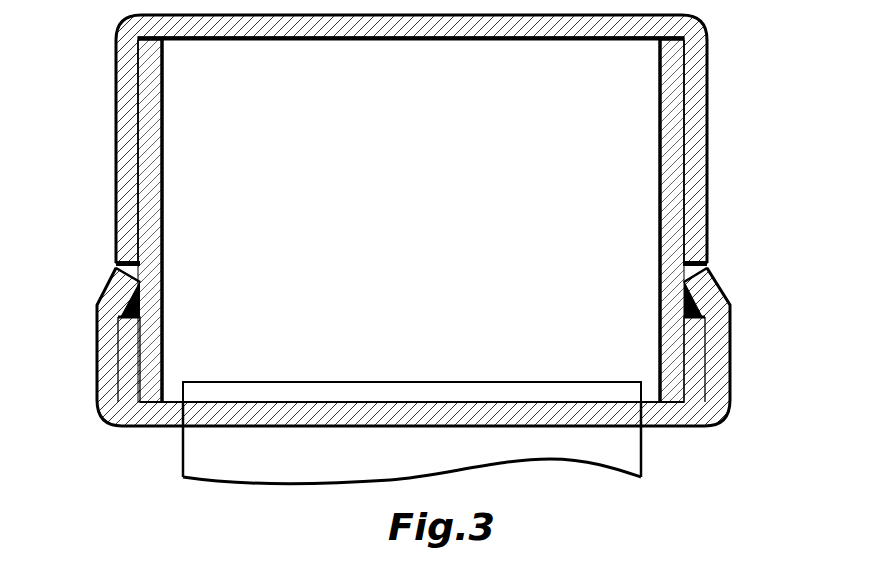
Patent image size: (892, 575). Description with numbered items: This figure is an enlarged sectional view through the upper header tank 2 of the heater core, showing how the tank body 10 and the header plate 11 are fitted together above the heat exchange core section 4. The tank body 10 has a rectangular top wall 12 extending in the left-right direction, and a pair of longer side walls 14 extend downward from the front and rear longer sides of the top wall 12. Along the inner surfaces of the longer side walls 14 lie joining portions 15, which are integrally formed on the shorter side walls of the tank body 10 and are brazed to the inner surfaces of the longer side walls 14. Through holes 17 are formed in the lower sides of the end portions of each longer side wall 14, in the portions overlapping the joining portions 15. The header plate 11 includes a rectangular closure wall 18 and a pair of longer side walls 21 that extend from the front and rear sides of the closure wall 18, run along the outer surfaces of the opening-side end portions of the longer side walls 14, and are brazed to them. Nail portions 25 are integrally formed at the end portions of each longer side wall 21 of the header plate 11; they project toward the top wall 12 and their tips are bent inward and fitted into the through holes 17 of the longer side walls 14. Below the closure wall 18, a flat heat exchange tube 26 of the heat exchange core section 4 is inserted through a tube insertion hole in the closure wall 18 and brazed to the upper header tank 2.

The upper header tank 2 is at (736, 146).
The tank body 10 is at (430, 139).
The header plate 11 is at (428, 355).
The top wall 12 is at (375, 39).
The longer side walls 14 is at (128, 192).
The joining portions 15 is at (150, 143).
The through holes 17 is at (118, 264).
The closure wall 18 is at (170, 408).
The longer side walls 21 is at (104, 346).
The nail portions 25 is at (108, 300).
The heat exchange tubes 26 is at (640, 462).
The heat exchange core section 4 is at (469, 442).